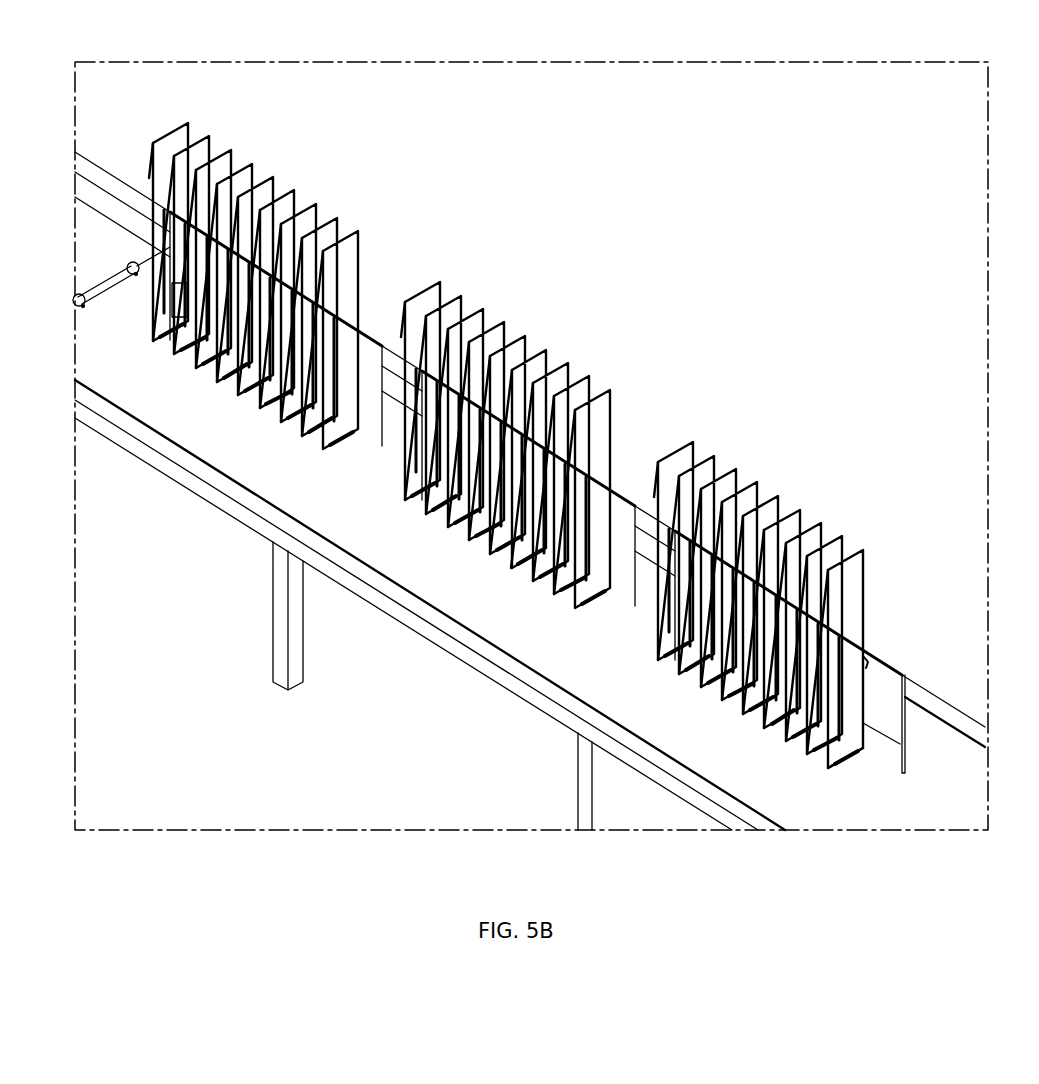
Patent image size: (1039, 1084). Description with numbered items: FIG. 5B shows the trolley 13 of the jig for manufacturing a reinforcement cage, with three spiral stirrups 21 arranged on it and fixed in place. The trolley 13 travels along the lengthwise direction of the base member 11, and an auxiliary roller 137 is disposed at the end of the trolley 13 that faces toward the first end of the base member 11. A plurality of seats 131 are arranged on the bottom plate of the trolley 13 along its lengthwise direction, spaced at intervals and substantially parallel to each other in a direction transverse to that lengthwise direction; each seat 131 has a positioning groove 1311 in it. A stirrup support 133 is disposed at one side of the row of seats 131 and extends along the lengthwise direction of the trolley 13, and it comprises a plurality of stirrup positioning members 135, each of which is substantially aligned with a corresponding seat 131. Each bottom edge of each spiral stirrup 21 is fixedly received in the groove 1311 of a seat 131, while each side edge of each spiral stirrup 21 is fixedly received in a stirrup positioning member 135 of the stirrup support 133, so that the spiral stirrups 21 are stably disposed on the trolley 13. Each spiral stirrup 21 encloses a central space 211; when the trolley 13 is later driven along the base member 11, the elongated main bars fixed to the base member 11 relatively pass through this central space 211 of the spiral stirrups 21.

The base member 11 is at (400, 605).
The trolley 13 is at (538, 650).
The seat 131 is at (850, 765).
The positioning groove 1311 is at (834, 771).
The stirrup support 133 is at (885, 678).
The stirrup positioning member 135 is at (866, 662).
The auxiliary roller 137 is at (100, 283).
The spiral stirrup 21 is at (293, 190).
The central space 211 is at (333, 268).